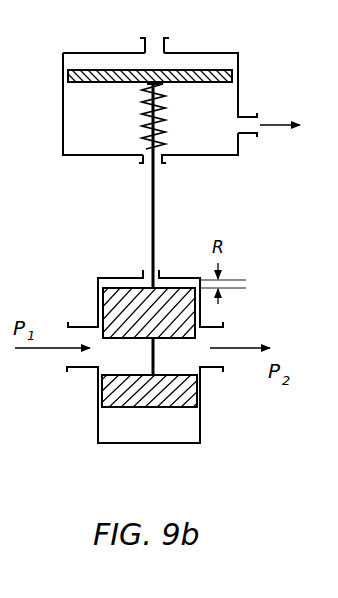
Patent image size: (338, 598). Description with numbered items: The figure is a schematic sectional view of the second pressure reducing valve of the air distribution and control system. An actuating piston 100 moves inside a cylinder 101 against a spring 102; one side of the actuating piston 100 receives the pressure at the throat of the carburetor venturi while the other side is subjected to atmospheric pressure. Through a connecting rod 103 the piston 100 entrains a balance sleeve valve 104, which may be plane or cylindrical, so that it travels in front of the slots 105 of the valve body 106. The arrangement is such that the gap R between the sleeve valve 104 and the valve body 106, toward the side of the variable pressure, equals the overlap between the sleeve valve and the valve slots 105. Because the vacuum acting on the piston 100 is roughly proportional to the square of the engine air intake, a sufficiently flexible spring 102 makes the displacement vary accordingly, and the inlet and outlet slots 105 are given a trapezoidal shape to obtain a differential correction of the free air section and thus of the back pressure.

The actuating piston 100 is at (90, 84).
The cylinder 101 is at (238, 76).
The spring 102 is at (147, 137).
The connecting rod 103 is at (151, 215).
The balance sleeve valve 104 is at (113, 308).
The slots of the valve body 105 is at (93, 357).
The valve body 106 is at (112, 446).